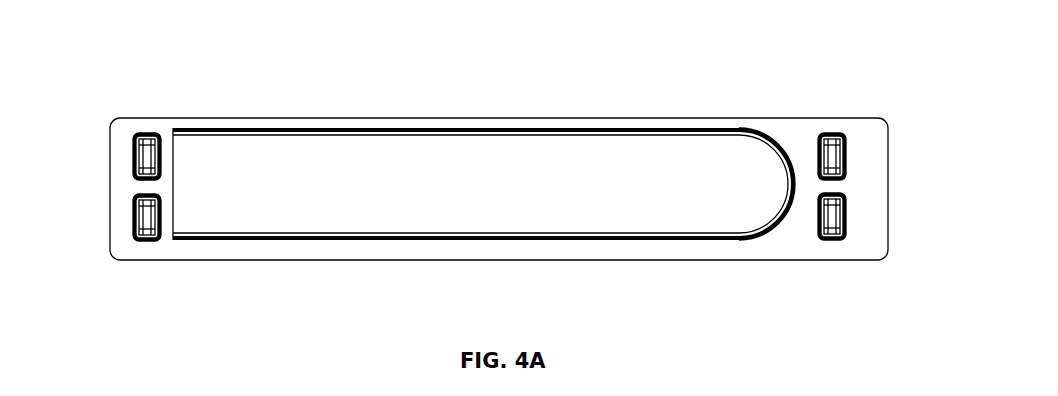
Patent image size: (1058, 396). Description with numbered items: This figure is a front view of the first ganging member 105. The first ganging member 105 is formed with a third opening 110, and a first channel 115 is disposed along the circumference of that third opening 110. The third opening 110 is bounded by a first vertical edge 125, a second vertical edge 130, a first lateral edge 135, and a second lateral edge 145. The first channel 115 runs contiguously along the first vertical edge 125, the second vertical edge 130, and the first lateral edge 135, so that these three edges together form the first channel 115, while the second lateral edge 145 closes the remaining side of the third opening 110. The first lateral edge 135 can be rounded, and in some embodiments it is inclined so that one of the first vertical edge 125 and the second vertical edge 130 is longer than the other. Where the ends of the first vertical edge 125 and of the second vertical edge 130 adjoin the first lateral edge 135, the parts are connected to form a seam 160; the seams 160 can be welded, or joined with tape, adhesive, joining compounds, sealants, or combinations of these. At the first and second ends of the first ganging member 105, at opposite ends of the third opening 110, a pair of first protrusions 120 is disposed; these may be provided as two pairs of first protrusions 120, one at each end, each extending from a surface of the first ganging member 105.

The first ganging member 105 is at (870, 118).
The third opening 110 is at (573, 177).
The first channel 115 is at (653, 235).
The pair of first protrusions 120 is at (140, 228).
The first vertical edge 125 is at (430, 128).
The second vertical edge 130 is at (392, 240).
The first lateral edge 135 is at (773, 226).
The second lateral edge 145 is at (173, 233).
The seam 160 is at (740, 130).